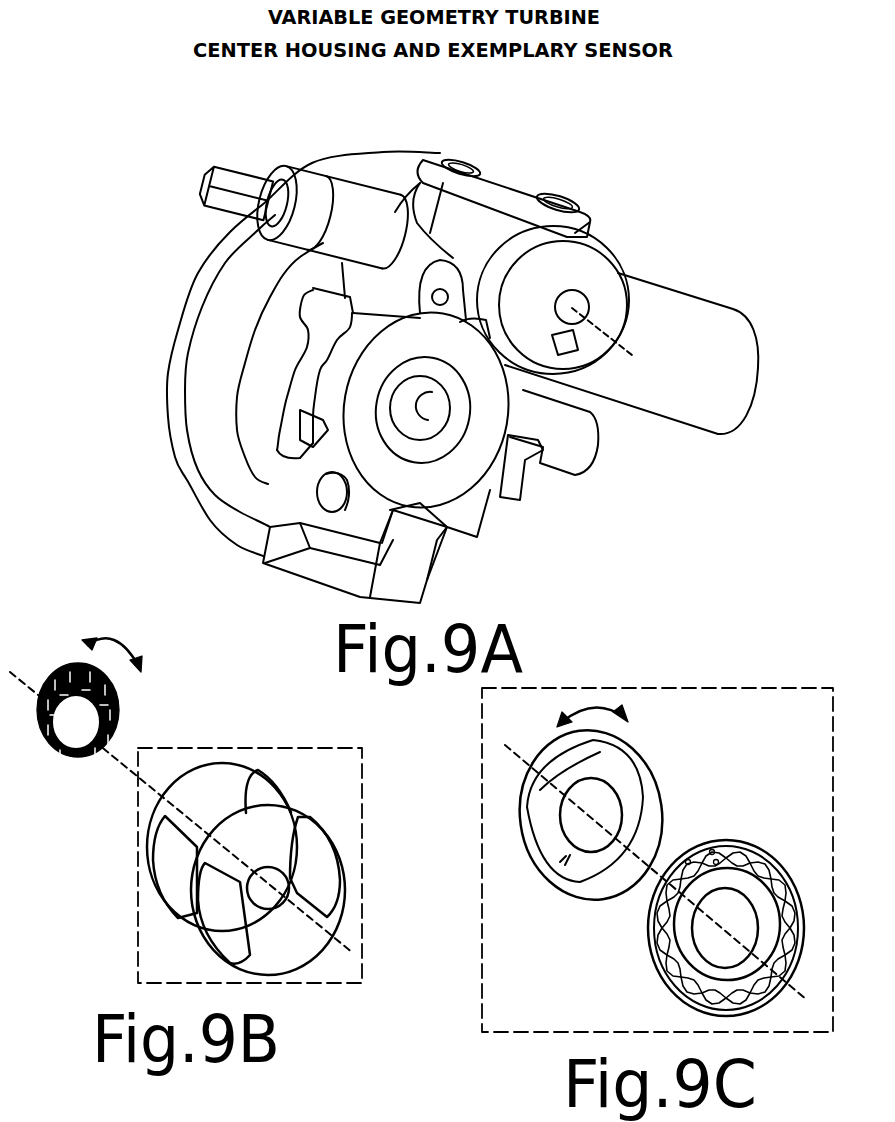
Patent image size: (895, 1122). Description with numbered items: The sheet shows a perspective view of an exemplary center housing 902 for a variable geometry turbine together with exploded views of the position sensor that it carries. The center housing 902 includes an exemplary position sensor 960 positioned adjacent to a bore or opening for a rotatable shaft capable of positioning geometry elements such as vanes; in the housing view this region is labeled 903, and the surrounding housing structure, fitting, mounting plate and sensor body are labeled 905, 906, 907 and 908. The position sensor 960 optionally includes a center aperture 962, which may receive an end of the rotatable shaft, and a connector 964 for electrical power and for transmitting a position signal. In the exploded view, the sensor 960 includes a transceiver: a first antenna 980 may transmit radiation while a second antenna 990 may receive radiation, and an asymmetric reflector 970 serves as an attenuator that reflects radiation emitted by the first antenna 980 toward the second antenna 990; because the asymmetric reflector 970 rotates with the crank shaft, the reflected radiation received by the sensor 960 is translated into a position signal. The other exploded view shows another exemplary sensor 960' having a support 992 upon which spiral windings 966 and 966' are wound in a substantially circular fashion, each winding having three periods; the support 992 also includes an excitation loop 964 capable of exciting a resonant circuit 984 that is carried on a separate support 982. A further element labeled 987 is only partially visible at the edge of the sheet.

In FIG. 9A, the center housing 902 is at (656, 118).
In FIG. 9A, the center housing flange bore 903 is at (430, 430).
In FIG. 9A, the center housing 905 is at (196, 275).
In FIG. 9A, the hex fitting / sensor connector 906 is at (223, 170).
In FIG. 9A, the mounting slots 907 is at (548, 198).
In FIG. 9A, the sensor body cylinder 908 is at (660, 284).
In FIG. 9A, the position sensor 960 is at (579, 296).
In FIG. 9B, the position sensor 960 is at (250, 846).
In FIG. 9C, the sensor 960' is at (657, 839).
In FIG. 9A, the center aperture 962 is at (572, 310).
In FIG. 9A, the connector / excitation loop 964 is at (568, 347).
In FIG. 9C, the connector / excitation loop 964 is at (703, 865).
In FIG. 9C, the spiral winding 966 is at (726, 886).
In FIG. 9C, the spiral winding 966' is at (726, 906).
In FIG. 9B, the asymmetric reflector 970 is at (120, 702).
In FIG. 9B, the first antenna 980 is at (237, 809).
In FIG. 9C, the support 982 is at (610, 771).
In FIG. 9C, the resonant circuit 984 is at (598, 878).
In FIG. 9B, the component (cut off) 987 is at (345, 1121).
In FIG. 9B, the second antenna 990 is at (275, 859).
In FIG. 9C, the support 992 is at (745, 1001).